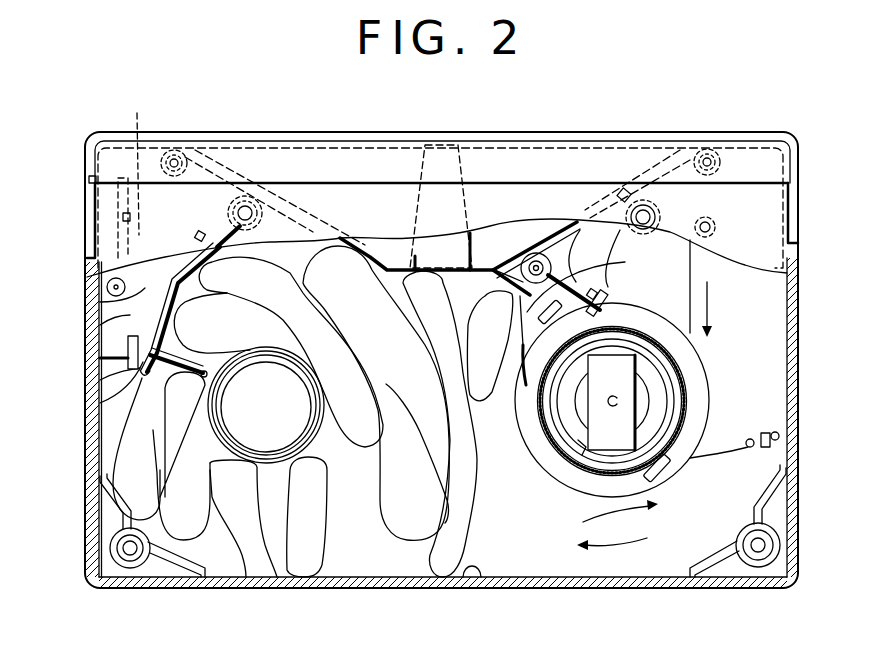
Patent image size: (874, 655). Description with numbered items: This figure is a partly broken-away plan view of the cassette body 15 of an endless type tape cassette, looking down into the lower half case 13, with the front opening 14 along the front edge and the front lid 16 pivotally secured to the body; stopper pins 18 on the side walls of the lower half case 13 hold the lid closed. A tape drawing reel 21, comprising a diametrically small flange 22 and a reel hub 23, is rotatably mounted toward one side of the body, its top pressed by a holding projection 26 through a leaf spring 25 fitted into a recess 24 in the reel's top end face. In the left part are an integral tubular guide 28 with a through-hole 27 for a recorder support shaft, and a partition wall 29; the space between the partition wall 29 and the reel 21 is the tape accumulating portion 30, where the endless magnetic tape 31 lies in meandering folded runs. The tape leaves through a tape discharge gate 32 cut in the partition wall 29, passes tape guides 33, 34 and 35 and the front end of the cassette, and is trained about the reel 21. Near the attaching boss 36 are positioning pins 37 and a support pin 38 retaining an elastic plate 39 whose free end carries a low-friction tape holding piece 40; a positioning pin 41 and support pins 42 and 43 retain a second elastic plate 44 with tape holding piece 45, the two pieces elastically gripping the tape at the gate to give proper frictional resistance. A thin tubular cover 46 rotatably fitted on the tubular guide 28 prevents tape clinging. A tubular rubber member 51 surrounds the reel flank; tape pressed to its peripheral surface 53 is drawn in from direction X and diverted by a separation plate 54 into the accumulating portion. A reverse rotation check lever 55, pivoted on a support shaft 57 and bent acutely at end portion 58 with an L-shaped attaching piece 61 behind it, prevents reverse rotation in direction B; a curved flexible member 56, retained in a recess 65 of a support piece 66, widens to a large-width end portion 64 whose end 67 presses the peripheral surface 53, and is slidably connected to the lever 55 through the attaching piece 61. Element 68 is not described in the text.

The lower half case 13 is at (88, 514).
The front opening 14 is at (398, 258).
The cassette body 15 is at (95, 262).
The front lid 16 is at (355, 133).
The stopper pins 18 is at (89, 179).
The tape drawing reel 21 is at (722, 375).
The flange 22 is at (570, 478).
The reel hub 23 is at (565, 412).
The recess 24 is at (624, 502).
The leaf spring 25 is at (618, 425).
The holding projection 26 is at (618, 398).
The through-hole 27 is at (230, 445).
The tubular guide 28 is at (247, 353).
The partition wall 29 is at (104, 342).
The tape accumulating portion 30 is at (358, 537).
The endless magnetic tape 31 is at (470, 548).
The tape discharge gate 32 is at (128, 358).
The tape guide 33 is at (718, 227).
The tape guide 34 is at (181, 151).
The tape guide 35 is at (712, 150).
The attaching boss 36 is at (262, 214).
The positioning pins 37 is at (224, 252).
The support pin 38 is at (218, 235).
The elastic plate 39 is at (196, 237).
The tape holding piece 40 is at (143, 394).
The positioning pin 41 is at (100, 218).
The support pin 42 is at (135, 162).
The support pin 43 is at (100, 268).
The elastic plate 44 is at (100, 302).
The tape holding piece 45 is at (140, 378).
The tubular cover 46 is at (250, 466).
The tubular rubber member 51 is at (690, 404).
The peripheral surface 53 is at (553, 462).
The separation plate 54 is at (500, 292).
The reverse rotation check lever 55 is at (530, 255).
The flexible member 56 is at (593, 214).
The support shaft 57 is at (493, 233).
The bent end portion 58 is at (610, 308).
The attaching piece 61 is at (531, 313).
The large-width end portion 64 is at (636, 185).
The recess 65 is at (628, 188).
The support piece 66 is at (652, 206).
The end 67 is at (692, 348).
The arm 68 is at (560, 226).